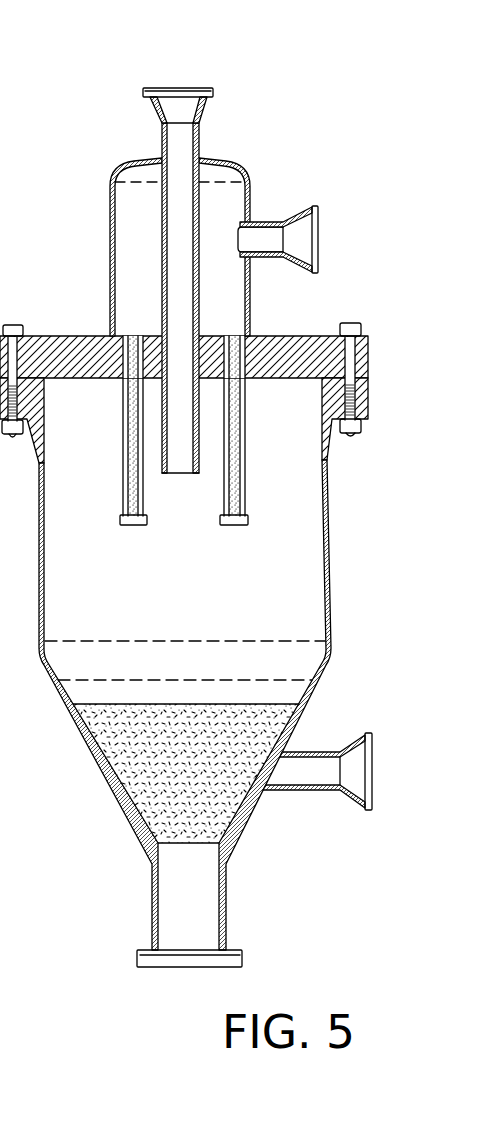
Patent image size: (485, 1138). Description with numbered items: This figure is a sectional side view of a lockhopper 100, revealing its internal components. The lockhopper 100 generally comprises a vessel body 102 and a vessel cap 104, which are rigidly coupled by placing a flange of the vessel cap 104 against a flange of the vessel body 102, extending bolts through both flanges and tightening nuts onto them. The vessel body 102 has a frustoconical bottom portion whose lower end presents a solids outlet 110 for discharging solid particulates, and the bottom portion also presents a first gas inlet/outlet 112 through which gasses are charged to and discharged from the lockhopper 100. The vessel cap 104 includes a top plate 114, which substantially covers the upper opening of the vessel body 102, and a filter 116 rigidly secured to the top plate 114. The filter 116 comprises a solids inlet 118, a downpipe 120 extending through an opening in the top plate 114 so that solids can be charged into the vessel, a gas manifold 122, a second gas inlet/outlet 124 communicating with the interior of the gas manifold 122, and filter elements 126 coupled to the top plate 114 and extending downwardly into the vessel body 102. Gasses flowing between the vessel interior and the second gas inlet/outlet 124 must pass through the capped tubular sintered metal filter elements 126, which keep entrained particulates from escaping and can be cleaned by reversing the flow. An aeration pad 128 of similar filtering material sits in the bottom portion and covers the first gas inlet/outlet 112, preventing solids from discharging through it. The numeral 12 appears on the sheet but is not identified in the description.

The lockhopper 100 is at (287, 108).
The vessel body 102 is at (332, 535).
The vessel cap 104 is at (320, 337).
The solids outlet 110 is at (170, 968).
The first gas inlet/outlet 112 is at (372, 745).
The top plate 114 is at (92, 343).
The filter 116 is at (200, 247).
The solids inlet 118 is at (166, 88).
The downpipe 120 is at (160, 202).
The gas manifold 122 is at (111, 243).
The second gas inlet/outlet 124 is at (316, 216).
The filter elements 126 is at (123, 473).
The aeration pad 128 is at (119, 785).
The vessel 12 is at (16, 788).